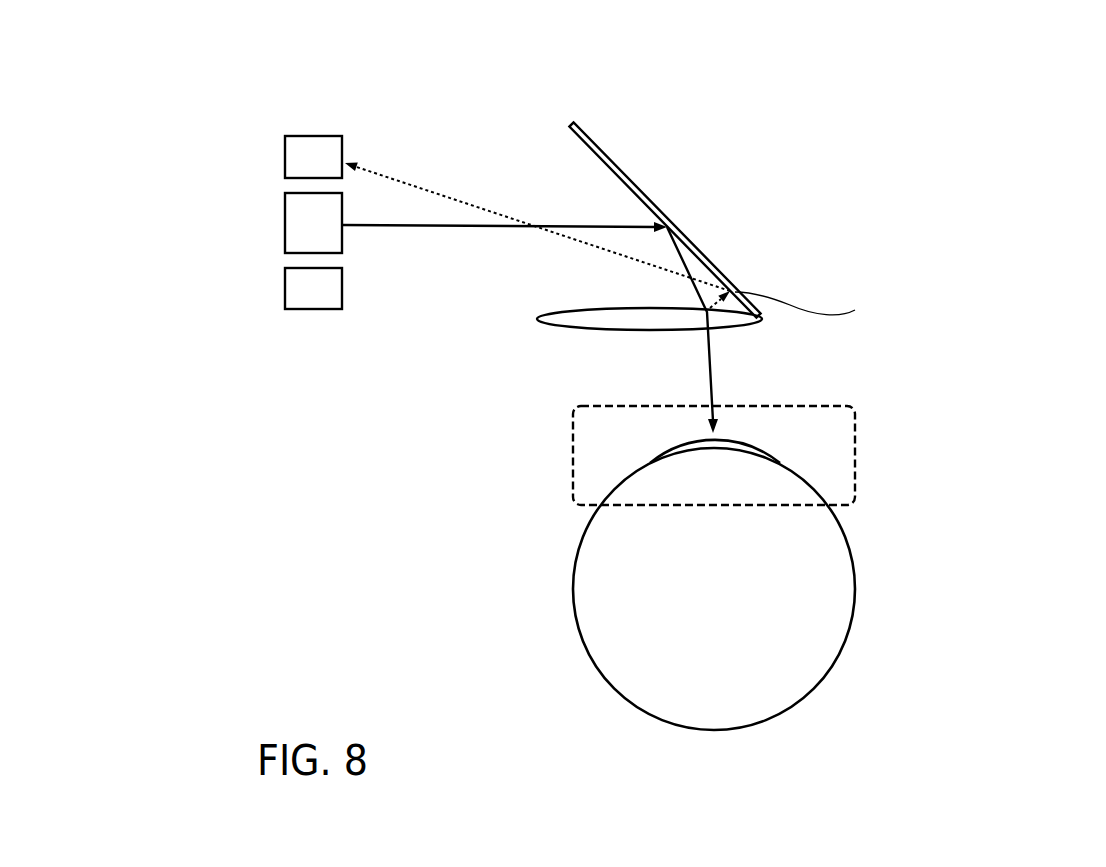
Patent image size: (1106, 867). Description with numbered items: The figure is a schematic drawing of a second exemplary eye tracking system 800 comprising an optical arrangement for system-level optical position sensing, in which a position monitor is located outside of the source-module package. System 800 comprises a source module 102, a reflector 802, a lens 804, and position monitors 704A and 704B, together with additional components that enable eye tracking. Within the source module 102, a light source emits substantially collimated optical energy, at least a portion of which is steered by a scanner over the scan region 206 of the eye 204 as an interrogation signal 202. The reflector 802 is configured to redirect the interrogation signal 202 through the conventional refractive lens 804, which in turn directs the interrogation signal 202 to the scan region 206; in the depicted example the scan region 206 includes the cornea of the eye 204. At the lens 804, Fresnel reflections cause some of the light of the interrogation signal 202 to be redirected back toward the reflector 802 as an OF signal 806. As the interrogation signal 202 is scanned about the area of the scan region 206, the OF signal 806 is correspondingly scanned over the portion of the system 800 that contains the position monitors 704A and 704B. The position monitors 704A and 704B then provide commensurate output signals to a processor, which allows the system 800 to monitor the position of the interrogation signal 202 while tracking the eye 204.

The eye tracking system 800 is at (276, 94).
The position monitor 704A is at (313, 158).
The source module 102 is at (313, 225).
The position monitor 704B is at (313, 287).
The interrogation signal 202 is at (517, 227).
The OF signal 806 is at (433, 187).
The reflector 802 is at (734, 283).
The lens 804 is at (571, 327).
The eye 204 is at (767, 603).
The scan region 206 is at (798, 505).